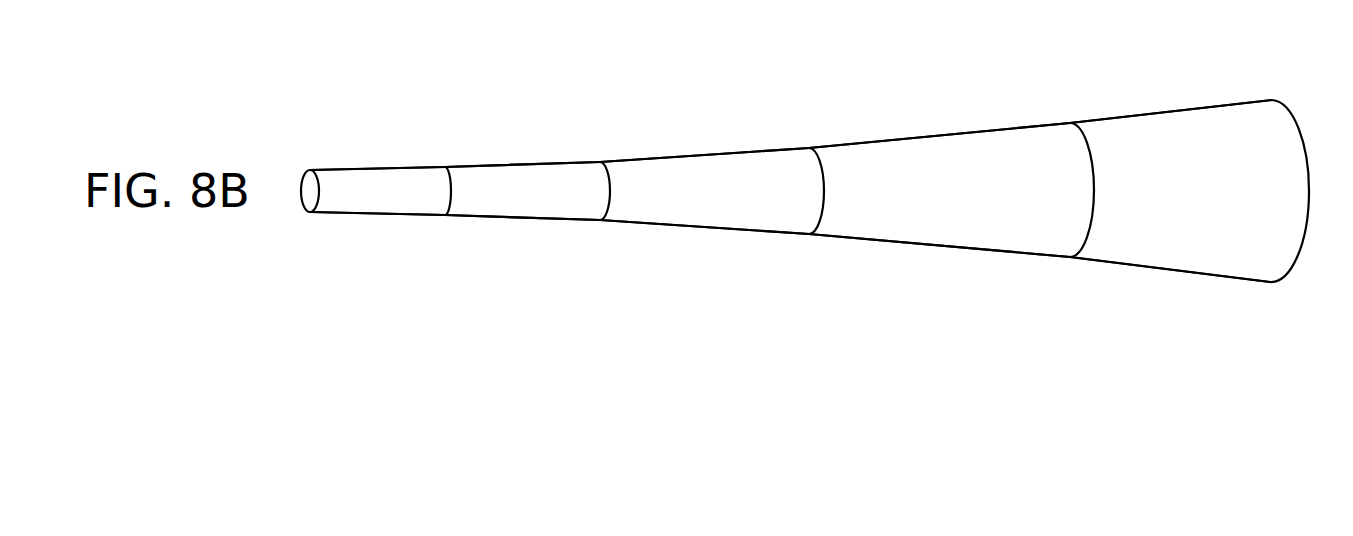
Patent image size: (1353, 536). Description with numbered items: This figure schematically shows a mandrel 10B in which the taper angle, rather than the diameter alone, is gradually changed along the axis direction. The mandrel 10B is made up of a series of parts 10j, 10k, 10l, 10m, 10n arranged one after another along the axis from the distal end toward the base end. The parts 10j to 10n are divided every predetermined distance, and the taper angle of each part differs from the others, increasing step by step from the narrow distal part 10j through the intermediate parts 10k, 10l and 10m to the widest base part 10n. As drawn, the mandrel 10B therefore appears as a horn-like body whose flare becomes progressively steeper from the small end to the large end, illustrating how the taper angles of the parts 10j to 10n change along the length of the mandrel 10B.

The mandrel 10B is at (364, 132).
The part 10j is at (378, 215).
The part 10k is at (513, 218).
The part 10l is at (695, 228).
The part 10m is at (930, 244).
The part 10n is at (1177, 272).